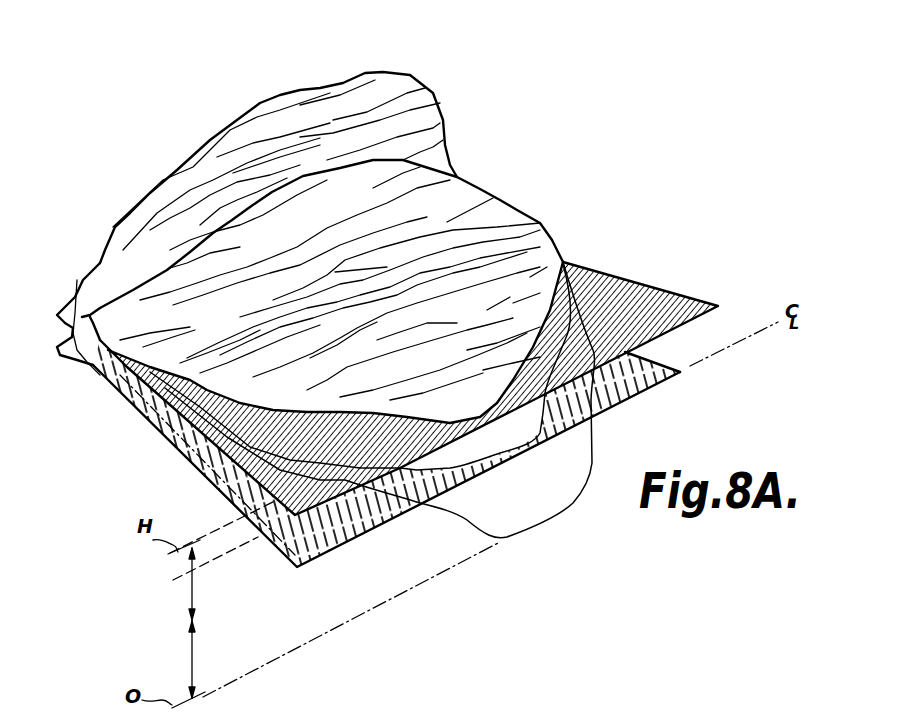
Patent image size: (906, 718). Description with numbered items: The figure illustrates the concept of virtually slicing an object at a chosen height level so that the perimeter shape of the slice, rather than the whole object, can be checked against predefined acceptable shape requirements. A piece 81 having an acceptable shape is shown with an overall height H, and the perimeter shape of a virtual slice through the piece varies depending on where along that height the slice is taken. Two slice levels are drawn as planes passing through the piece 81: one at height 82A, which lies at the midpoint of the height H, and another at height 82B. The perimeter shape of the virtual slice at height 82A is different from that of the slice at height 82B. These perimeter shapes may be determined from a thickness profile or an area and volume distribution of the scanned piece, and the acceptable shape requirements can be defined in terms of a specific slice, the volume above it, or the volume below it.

The piece 81 is at (270, 98).
The height of virtual slice 82A is at (297, 567).
The height of virtual slice 82B is at (173, 580).